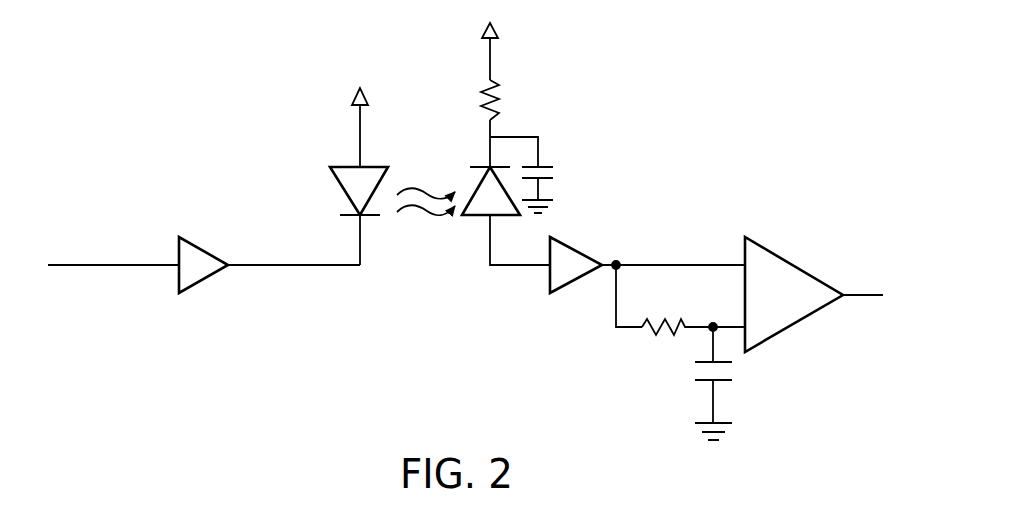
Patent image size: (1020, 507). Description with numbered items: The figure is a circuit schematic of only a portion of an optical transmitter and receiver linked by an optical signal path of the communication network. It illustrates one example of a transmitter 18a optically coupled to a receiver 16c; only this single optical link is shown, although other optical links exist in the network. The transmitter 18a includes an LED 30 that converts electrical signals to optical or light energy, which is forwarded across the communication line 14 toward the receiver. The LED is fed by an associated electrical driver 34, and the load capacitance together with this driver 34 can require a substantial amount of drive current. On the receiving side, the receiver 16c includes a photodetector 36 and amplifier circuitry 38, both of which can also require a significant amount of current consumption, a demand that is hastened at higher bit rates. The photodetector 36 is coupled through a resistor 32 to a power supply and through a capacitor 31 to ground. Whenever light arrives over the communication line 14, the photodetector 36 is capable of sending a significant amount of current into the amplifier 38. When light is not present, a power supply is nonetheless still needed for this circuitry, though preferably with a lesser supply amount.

The communication line 14 is at (420, 270).
The receiver 16c is at (665, 231).
The transmitter 18a is at (235, 260).
The LED 30 is at (373, 162).
The capacitor 31 is at (570, 173).
The resistor 32 is at (524, 98).
The electrical driver 34 is at (202, 280).
The photodetector 36 is at (478, 180).
The amplifier circuitry 38 is at (680, 231).